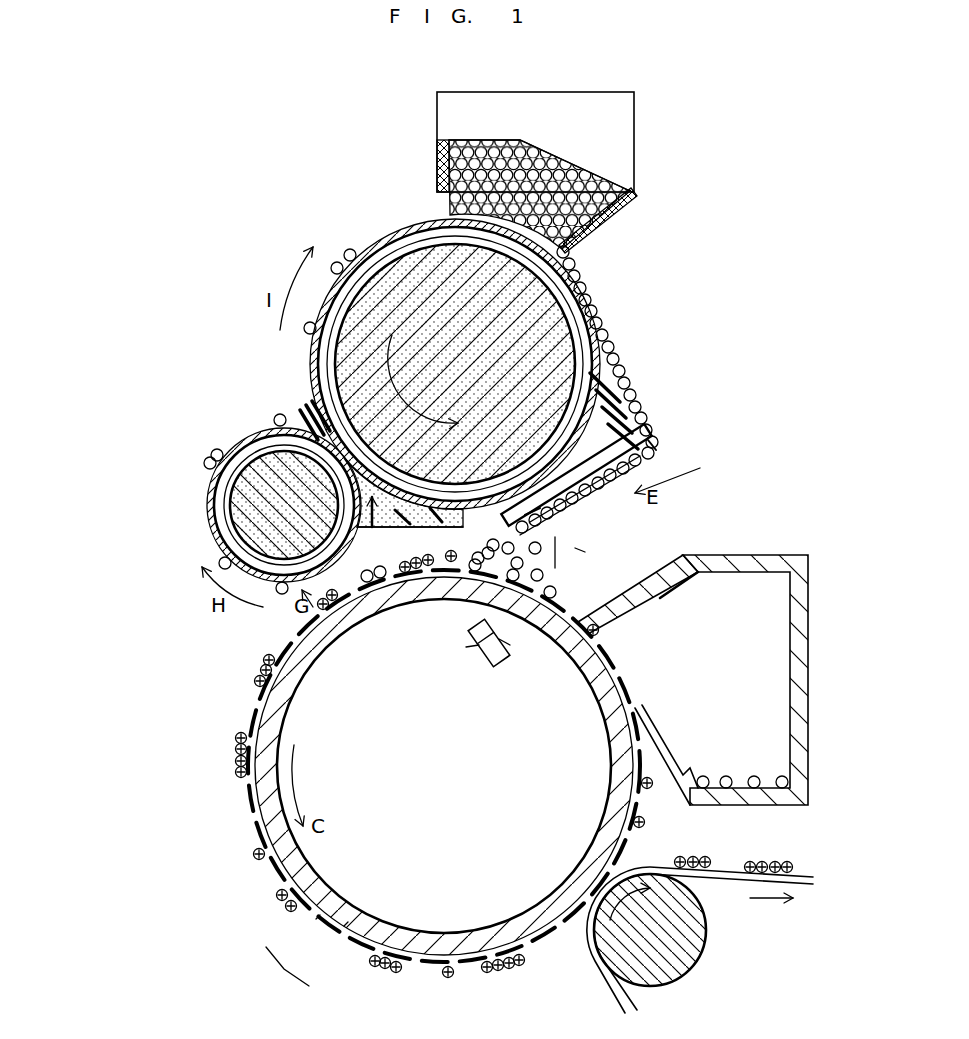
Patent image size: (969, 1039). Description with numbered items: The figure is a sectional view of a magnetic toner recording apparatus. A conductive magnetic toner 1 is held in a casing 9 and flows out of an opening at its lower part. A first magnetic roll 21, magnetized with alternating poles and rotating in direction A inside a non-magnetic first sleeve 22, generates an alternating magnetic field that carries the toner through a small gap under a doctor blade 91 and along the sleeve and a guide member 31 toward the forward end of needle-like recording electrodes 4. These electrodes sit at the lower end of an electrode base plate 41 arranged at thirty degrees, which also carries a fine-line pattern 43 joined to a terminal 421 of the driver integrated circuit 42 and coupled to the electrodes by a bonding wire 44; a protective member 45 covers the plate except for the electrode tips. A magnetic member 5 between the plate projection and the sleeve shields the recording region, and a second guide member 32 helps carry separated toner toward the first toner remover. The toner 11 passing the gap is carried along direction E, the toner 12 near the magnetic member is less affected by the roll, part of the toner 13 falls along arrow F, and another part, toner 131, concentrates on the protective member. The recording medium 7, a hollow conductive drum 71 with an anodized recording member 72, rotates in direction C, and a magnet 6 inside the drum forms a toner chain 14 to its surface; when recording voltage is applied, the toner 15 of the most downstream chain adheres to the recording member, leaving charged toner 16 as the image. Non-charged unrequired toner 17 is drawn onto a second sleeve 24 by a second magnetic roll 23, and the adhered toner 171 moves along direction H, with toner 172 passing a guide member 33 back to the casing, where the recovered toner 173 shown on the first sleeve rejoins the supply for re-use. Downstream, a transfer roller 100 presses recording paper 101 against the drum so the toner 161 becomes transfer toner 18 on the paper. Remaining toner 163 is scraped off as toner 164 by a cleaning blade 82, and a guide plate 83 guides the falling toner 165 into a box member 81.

The conductive magnetic toner 1 is at (437, 146).
The recording electrode 4 is at (462, 548).
The magnetic member 5 is at (365, 535).
The magnet 6 is at (494, 660).
The recording medium 7 is at (283, 972).
The casing 9 is at (636, 117).
The toner carried through the small gap 11 is at (584, 292).
The toner near the magnetic member 12 is at (547, 538).
The toner upstream of the recording electrode 13 is at (556, 592).
The toner chain 14 is at (440, 558).
The toner of the most downstream toner chain 15 is at (398, 527).
The charged toner 16 is at (407, 577).
The unrequired toner 17 is at (376, 575).
The transfer toner 18 is at (705, 860).
The first magnetic roll 21 is at (427, 258).
The first sleeve 22 is at (387, 237).
The second magnetic roll 23 is at (238, 438).
The second sleeve 24 is at (263, 432).
The guide member 31 is at (605, 373).
The second guide member 32 is at (372, 528).
The guide member 33 is at (312, 407).
The electrode base plate 41 is at (630, 425).
The driver integrated circuit 42 is at (652, 466).
The fine-line pattern 43 is at (655, 455).
The bonding wire 44 is at (578, 552).
The protective member 45 is at (653, 438).
The drum 71 is at (344, 926).
The recording member 72 is at (316, 919).
The box member 81 is at (763, 553).
The cleaning blade 82 is at (628, 605).
The guide plate 83 is at (652, 730).
The doctor blade 91 is at (612, 208).
The transfer roller 100 is at (678, 980).
The recording paper 101 is at (740, 884).
The toner concentrated on the protective member 131 is at (552, 581).
The toner image on the recording member 161 is at (259, 669).
The remaining toner 163 is at (646, 823).
The scraped-off toner 164 is at (598, 632).
The separated toner 165 is at (728, 777).
The toner adhered on the second sleeve 171 is at (228, 572).
The toner between the sleeves 172 is at (280, 420).
The carrier particles 173 is at (346, 250).
The terminal 421 is at (540, 510).